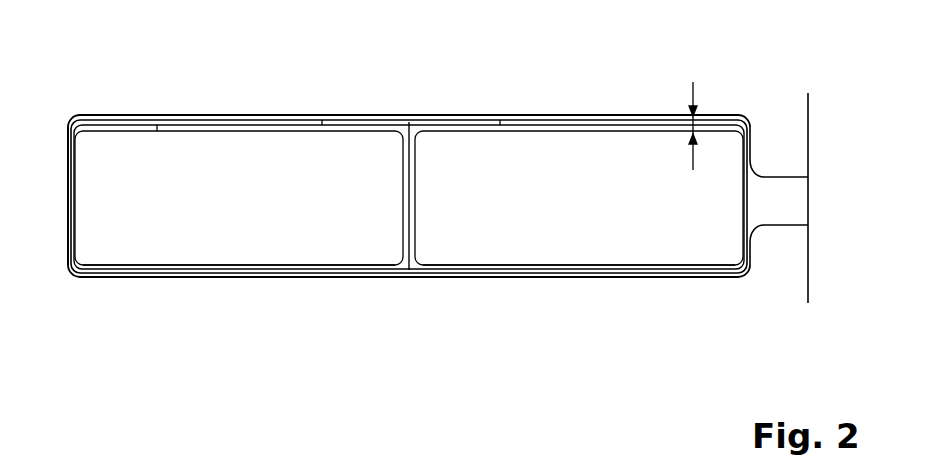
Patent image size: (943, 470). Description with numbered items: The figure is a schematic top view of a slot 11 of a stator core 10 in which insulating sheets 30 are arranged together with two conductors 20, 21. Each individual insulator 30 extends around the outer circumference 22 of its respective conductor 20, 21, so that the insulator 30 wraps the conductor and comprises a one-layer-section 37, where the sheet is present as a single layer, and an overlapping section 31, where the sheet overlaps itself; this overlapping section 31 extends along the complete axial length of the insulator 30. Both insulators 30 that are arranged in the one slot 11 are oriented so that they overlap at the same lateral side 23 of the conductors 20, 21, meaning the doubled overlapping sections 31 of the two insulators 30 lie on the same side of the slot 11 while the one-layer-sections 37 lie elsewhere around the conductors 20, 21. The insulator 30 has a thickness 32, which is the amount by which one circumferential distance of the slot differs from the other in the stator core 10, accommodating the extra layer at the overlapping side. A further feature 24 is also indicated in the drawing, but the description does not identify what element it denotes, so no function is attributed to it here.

The stator core 10 is at (778, 135).
The slot 11 is at (375, 105).
The conductor 20 is at (187, 165).
The conductor 21 is at (528, 160).
The outer circumference 22 is at (68, 116).
The lateral side 23 is at (474, 105).
The bottom wall 24 is at (333, 285).
The insulating sheet 30 is at (125, 268).
The overlapping section 31 is at (240, 108).
The thickness 32 is at (694, 88).
The one-layer-section 37 is at (633, 280).